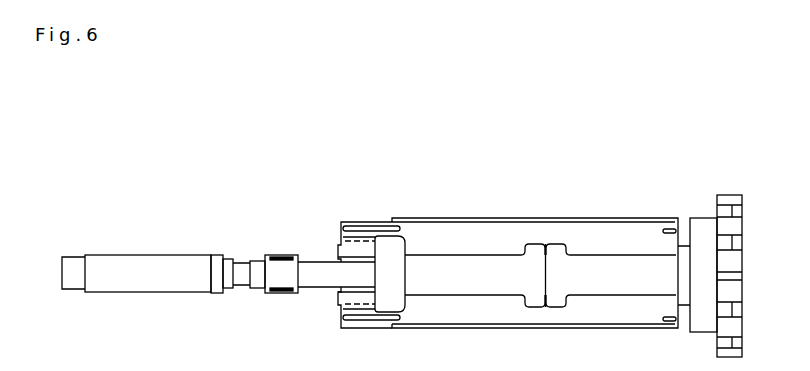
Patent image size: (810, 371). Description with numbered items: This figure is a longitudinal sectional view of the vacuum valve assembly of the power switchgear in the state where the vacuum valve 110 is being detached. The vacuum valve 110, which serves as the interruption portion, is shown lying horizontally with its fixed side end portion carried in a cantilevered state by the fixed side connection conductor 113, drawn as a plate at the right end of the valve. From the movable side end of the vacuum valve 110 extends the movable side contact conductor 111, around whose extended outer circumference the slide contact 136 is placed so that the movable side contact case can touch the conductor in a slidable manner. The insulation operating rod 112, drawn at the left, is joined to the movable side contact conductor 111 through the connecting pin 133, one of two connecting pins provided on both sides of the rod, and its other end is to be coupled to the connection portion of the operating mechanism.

The vacuum valve 110 is at (599, 219).
The movable side contact conductor 111 is at (472, 263).
The insulation operating rod 112 is at (127, 255).
The fixed side connection conductor 113 is at (728, 195).
The connecting pin 133 is at (220, 255).
The slide contact 136 is at (280, 257).